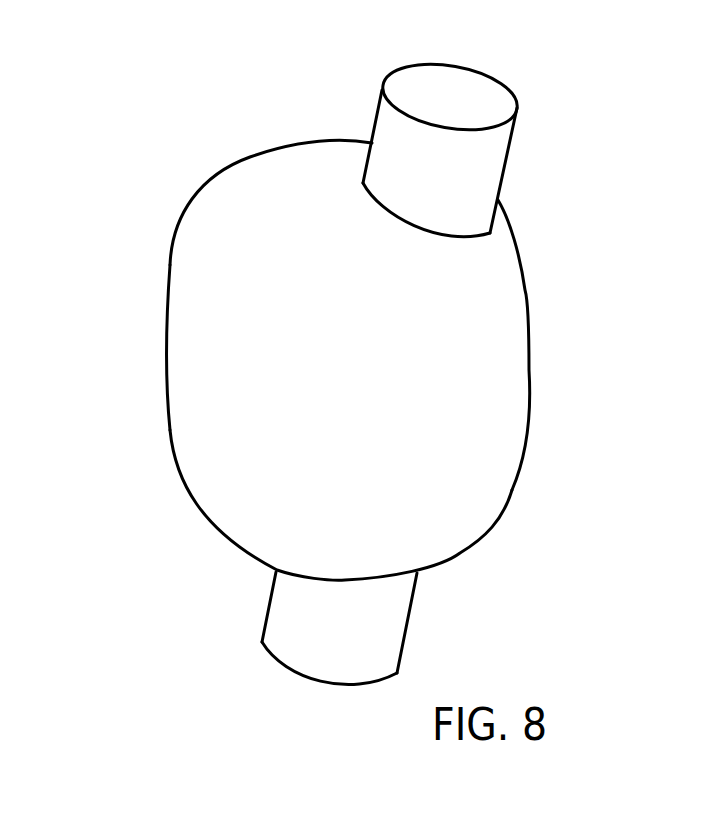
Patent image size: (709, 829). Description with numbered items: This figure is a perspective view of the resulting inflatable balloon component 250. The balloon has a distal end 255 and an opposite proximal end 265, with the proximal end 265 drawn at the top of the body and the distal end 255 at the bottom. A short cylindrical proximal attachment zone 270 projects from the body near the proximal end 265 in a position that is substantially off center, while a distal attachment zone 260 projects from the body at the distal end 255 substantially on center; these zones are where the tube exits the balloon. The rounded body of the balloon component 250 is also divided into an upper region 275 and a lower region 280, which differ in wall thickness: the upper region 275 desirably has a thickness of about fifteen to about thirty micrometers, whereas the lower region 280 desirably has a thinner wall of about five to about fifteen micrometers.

The inflatable balloon component 250 is at (368, 370).
The distal end 255 is at (291, 538).
The distal attachment zone 260 is at (415, 598).
The proximal end 265 is at (291, 213).
The proximal attachment zone 270 is at (512, 150).
The upper region 275 is at (497, 340).
The lower region 280 is at (190, 375).